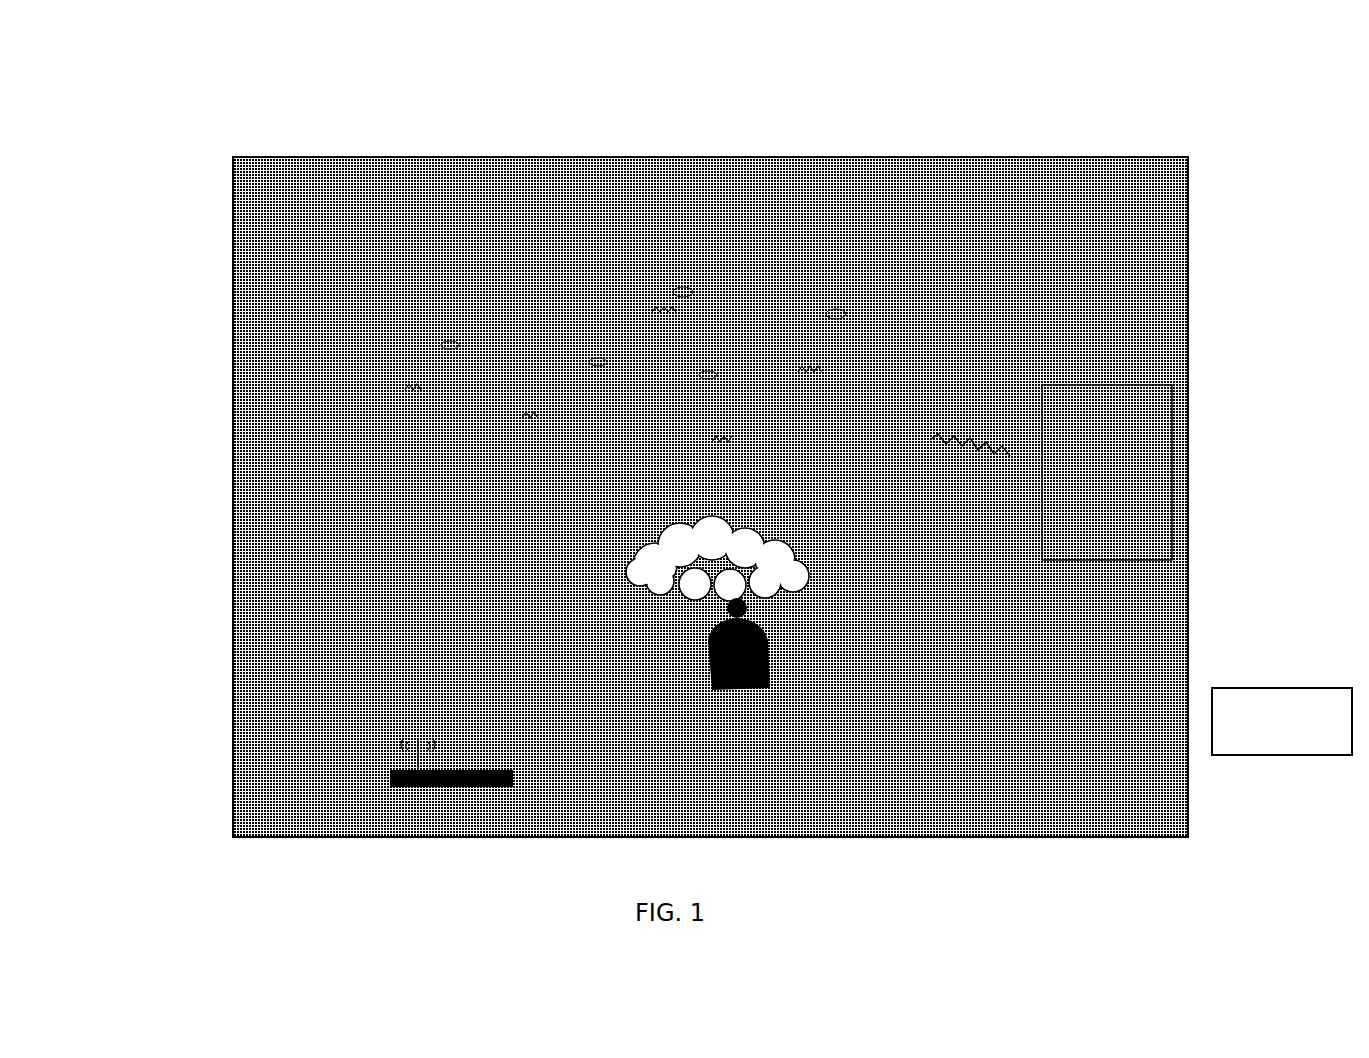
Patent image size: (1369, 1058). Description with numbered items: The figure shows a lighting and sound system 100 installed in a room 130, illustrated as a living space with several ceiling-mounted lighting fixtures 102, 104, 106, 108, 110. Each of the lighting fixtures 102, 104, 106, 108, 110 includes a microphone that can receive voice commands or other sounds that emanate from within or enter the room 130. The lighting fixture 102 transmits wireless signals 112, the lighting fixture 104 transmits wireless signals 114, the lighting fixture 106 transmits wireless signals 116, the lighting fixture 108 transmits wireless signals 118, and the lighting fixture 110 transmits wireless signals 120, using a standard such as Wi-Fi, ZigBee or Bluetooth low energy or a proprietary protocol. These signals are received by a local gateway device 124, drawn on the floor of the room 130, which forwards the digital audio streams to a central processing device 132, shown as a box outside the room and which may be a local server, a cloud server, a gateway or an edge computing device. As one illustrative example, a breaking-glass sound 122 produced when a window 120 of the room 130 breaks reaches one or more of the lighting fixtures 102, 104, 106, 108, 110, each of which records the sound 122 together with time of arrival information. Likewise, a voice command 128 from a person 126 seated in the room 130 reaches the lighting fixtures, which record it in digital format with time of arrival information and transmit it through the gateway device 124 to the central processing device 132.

The lighting and sound system 100 is at (188, 148).
The lighting fixture 102 is at (838, 310).
The lighting fixture 104 is at (678, 288).
The lighting fixture 106 is at (443, 342).
The lighting fixture 108 is at (710, 375).
The lighting fixture 110 is at (593, 360).
The wireless signals 112 is at (820, 363).
The wireless signals 114 is at (658, 317).
The wireless signals 116 is at (412, 398).
The wireless signals 118 is at (725, 445).
The wireless signals / window 120 is at (1152, 461).
The breaking-glass sound 122 is at (983, 453).
The local gateway device 124 is at (397, 777).
The person 126 is at (713, 685).
The voice command 128 is at (660, 556).
The room 130 is at (245, 513).
The central processing device 132 is at (1267, 688).